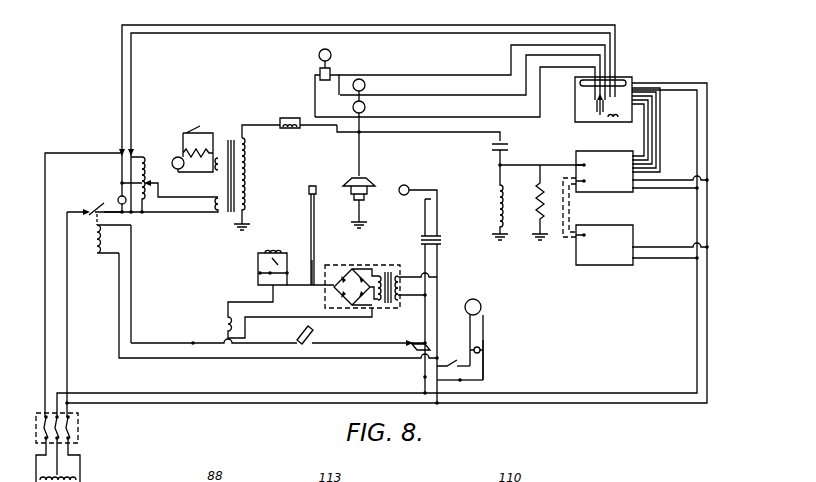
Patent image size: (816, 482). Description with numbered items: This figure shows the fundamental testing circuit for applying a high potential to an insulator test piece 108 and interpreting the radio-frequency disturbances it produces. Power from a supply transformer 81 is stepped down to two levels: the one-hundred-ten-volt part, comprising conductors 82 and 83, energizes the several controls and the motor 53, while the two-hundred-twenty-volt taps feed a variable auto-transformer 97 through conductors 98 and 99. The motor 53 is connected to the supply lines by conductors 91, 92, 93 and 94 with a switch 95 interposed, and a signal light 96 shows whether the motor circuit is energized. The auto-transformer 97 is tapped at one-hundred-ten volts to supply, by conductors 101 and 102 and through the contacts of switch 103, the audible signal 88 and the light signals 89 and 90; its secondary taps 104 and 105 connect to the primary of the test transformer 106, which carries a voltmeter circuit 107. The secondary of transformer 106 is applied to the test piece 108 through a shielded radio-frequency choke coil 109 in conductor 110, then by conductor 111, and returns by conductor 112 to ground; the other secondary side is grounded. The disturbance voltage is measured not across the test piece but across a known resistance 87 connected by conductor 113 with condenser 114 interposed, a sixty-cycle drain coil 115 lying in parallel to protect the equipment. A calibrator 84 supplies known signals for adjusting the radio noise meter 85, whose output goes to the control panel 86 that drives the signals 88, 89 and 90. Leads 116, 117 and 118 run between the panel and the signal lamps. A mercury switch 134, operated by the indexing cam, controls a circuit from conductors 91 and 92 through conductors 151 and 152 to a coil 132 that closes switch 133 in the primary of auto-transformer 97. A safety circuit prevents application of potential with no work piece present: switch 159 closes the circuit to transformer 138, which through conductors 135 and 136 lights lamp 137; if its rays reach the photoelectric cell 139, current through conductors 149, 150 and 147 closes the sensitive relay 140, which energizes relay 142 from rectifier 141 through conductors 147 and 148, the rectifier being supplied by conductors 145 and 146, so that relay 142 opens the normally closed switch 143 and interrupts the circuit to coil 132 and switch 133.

The motor 53 is at (481, 305).
The transformer 81 is at (82, 478).
The conductor 82 is at (110, 404).
The conductor 83 is at (92, 393).
The calibrator 84 is at (604, 265).
The radio noise meter 85 is at (603, 190).
The control panel 86 is at (622, 78).
The resistance 87 is at (536, 212).
The audible signal 88 is at (318, 67).
The light signal 89 is at (365, 81).
The light signal 90 is at (365, 107).
The conductor 91 is at (424, 382).
The conductor 92 is at (440, 384).
The conductor 93 is at (468, 362).
The conductor 94 is at (484, 358).
The switch 95 is at (485, 376).
The signal light 96 is at (480, 349).
The auto-transformer 97 is at (146, 163).
The conductor 98 is at (68, 300).
The conductor 99 is at (44, 300).
The conductor 101 is at (131, 69).
The conductor 102 is at (118, 69).
The switch 103 is at (598, 112).
The secondary tap 104 is at (213, 211).
The secondary tap 105 is at (190, 197).
The test transformer 106 is at (246, 170).
The voltmeter circuit 107 is at (202, 133).
The insulator test piece 108 is at (372, 180).
The shielded radio-frequency choke coil 109 is at (282, 130).
The conductor 110 is at (320, 126).
The conductor 111 is at (362, 153).
The conductor 112 is at (356, 213).
The conductor 113 is at (432, 132).
The condenser 114 is at (508, 149).
The drain coil 115 is at (497, 198).
The conductor 116 is at (438, 76).
The conductor 117 is at (445, 95).
The conductor 118 is at (452, 117).
The coil 132 is at (101, 243).
The switch 133 is at (100, 204).
The mercury switch 134 is at (316, 333).
The conductor 135 is at (422, 217).
The conductor 136 is at (438, 213).
The light 137 is at (410, 186).
The transformer 138 is at (441, 242).
The photoelectric cell 139 is at (309, 191).
The relay 140 is at (258, 266).
The rectifier 141 is at (362, 286).
The relay 142 is at (222, 324).
The switch 143 is at (194, 345).
The conductor 145 is at (411, 272).
The conductor 146 is at (400, 300).
The conductor 147 is at (292, 286).
The conductor 148 is at (280, 343).
The conductor 149 is at (316, 260).
The conductor 150 is at (311, 224).
The conductor 151 is at (132, 273).
The conductor 152 is at (118, 273).
The switch 159 is at (418, 345).